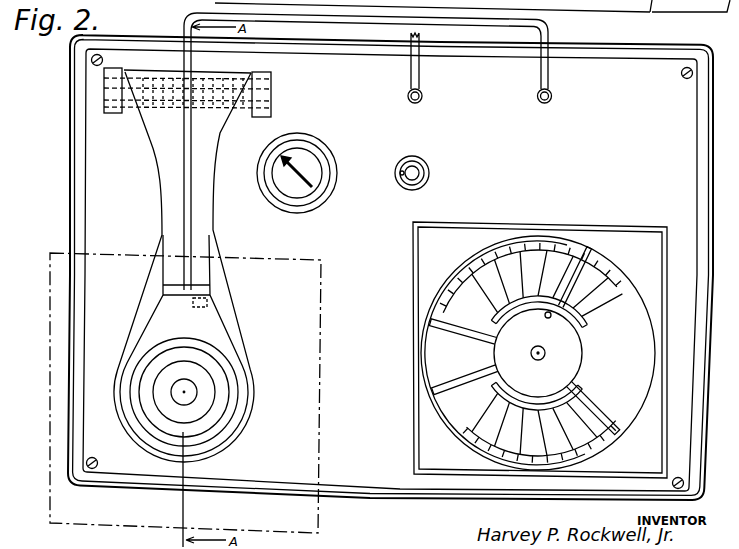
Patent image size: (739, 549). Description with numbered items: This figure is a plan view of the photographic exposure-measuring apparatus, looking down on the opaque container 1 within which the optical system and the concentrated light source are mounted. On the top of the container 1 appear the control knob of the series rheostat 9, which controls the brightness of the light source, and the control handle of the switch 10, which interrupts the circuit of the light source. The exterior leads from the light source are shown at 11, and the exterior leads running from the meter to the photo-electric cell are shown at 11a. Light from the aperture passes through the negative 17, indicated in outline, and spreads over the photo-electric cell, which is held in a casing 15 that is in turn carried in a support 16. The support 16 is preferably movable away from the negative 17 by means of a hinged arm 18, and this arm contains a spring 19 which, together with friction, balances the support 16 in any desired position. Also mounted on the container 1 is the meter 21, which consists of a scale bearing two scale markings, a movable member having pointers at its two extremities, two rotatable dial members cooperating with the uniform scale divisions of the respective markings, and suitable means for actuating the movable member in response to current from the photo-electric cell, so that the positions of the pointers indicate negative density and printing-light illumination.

The opaque container 1 is at (678, 155).
The series rheostat 9 is at (318, 155).
The switch 10 is at (425, 168).
The exterior leads from the light source 11 is at (419, 72).
The exterior leads from the meter to the photoelectric cell 11a is at (548, 74).
The casing 15 is at (138, 413).
The support 16 is at (113, 393).
The negative 17 is at (322, 272).
The hinged arm 18 is at (163, 202).
The spring 19 is at (148, 112).
The meter 21 is at (515, 222).